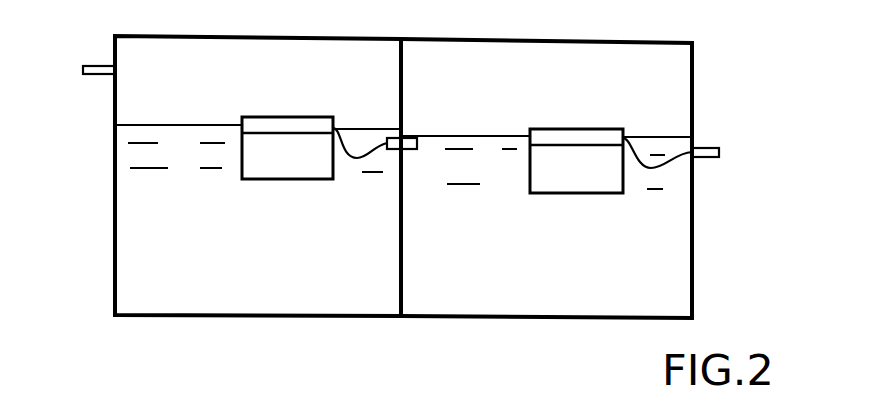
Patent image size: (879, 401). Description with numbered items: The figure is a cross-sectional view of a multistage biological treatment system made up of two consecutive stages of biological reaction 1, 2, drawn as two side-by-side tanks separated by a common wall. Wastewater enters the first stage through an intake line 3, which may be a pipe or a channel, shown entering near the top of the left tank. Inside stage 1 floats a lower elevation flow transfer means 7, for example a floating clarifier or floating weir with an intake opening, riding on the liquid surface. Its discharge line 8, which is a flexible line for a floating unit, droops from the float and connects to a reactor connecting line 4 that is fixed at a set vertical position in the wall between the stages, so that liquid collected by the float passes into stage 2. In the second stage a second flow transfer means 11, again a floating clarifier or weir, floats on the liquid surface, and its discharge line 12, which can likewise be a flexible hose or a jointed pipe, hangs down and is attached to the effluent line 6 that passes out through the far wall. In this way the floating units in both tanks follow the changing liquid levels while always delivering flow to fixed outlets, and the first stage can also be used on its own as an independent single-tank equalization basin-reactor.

The first stage of biological reaction 1 is at (317, 318).
The second stage of biological reaction 2 is at (583, 320).
The intake line 3 is at (103, 65).
The reactor connecting line 4 is at (408, 137).
The effluent line 6 is at (708, 147).
The lower elevation flow transfer means 7 is at (289, 116).
The discharge line 8 is at (367, 157).
The flow transfer means 11 is at (563, 127).
The discharge line 12 is at (652, 170).